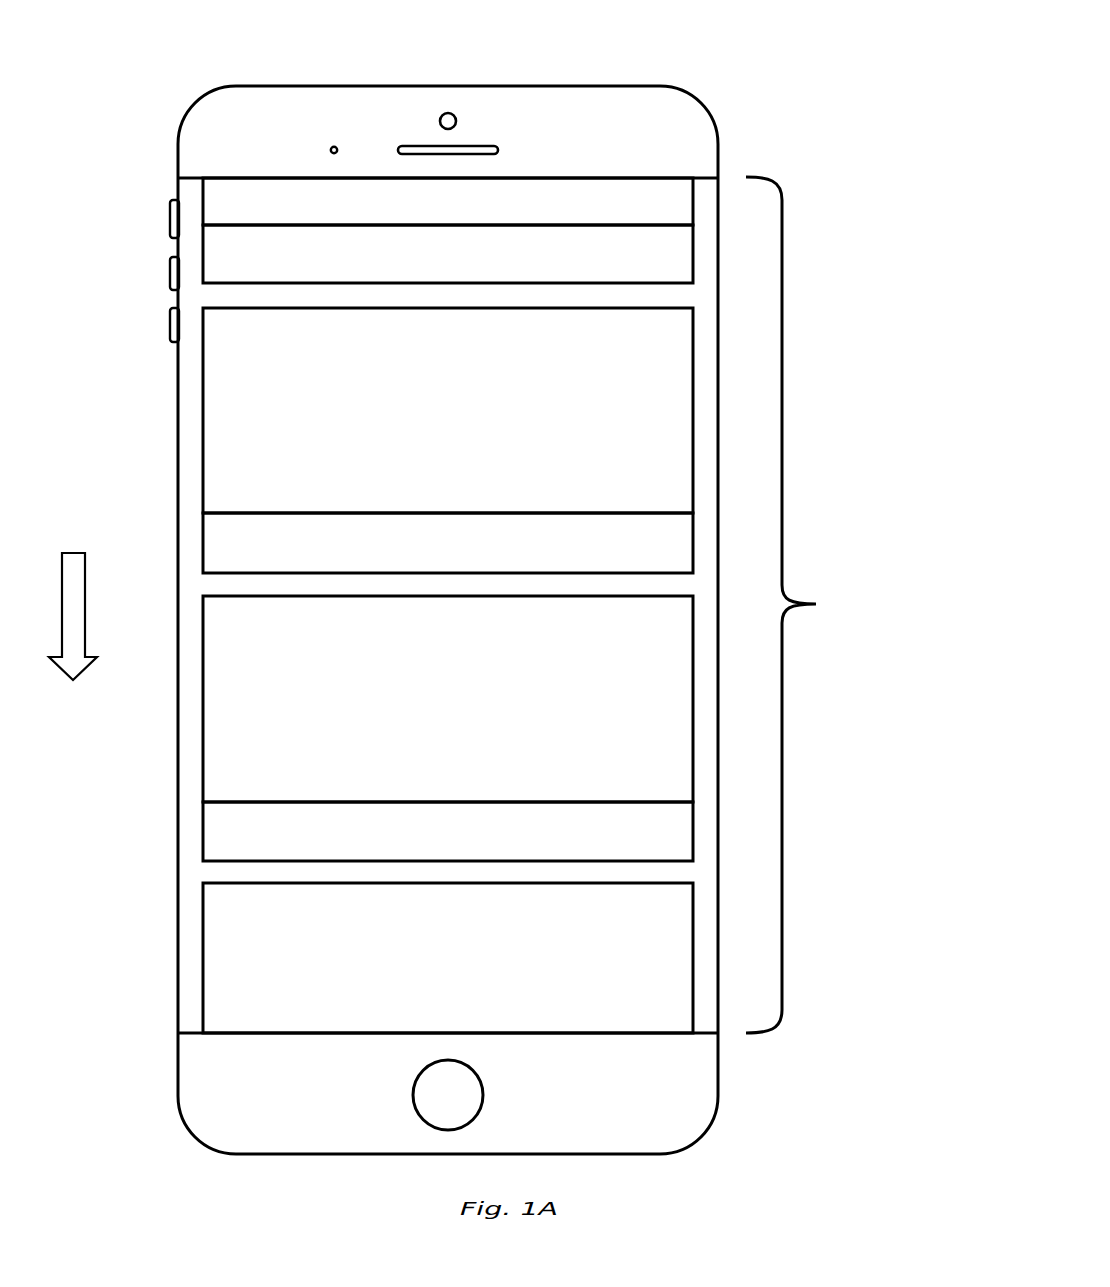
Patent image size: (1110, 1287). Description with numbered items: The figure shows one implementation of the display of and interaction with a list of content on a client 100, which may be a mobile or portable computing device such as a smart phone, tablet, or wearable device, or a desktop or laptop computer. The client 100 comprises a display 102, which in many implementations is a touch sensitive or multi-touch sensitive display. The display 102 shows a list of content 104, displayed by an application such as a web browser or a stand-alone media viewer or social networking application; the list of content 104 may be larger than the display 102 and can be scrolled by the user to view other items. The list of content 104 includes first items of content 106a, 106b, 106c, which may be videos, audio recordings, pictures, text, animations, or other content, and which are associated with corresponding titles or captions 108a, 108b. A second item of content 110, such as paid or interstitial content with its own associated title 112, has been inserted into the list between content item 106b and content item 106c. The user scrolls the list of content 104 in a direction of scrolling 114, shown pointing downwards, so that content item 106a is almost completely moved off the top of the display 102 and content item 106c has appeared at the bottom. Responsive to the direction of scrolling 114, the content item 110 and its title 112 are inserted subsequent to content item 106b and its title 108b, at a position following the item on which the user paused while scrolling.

The client 100 is at (773, 37).
The display 102 is at (197, 291).
The list of content 104 is at (896, 642).
The content item 106a is at (540, 217).
The content item 106b is at (540, 344).
The content item 106c is at (540, 920).
The title 108a is at (497, 262).
The title 108b is at (498, 551).
The item of content 110 is at (533, 633).
The title 112 is at (490, 839).
The direction of scrolling 114 is at (143, 544).